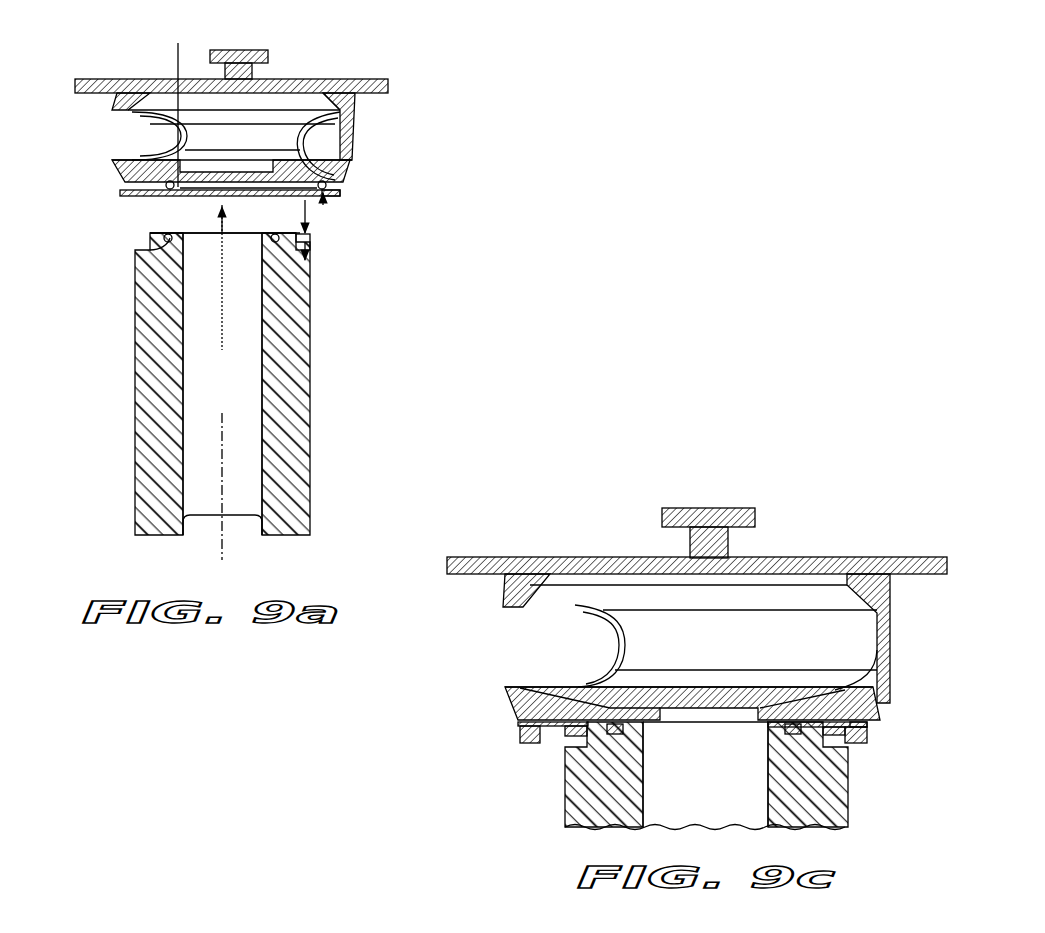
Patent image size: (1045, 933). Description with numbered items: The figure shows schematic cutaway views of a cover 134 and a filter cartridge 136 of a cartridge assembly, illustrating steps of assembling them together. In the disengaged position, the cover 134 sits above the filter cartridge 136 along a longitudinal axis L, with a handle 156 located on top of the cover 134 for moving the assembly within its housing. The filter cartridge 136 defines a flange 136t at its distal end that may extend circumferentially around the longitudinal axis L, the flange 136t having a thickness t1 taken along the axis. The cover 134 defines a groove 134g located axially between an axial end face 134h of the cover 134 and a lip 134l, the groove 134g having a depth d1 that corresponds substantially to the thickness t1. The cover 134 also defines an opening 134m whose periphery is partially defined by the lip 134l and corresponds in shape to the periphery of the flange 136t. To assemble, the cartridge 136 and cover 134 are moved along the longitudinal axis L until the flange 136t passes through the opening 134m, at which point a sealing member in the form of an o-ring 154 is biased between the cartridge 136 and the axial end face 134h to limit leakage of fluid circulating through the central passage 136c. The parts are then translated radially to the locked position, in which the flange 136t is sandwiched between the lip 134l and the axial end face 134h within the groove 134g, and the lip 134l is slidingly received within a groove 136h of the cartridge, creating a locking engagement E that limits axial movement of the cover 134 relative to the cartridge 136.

In FIG. 9A, the cover 134 is at (362, 136).
In FIG. 9C, the cover 134 is at (845, 555).
In FIG. 9A, the handle 156 is at (262, 48).
In FIG. 9A, the groove 134g is at (347, 104).
In FIG. 9C, the groove 134g is at (858, 737).
In FIG. 9A, the axial end face 134h is at (180, 104).
In FIG. 9C, the axial end face 134h is at (775, 740).
In FIG. 9A, the opening 134m is at (140, 196).
In FIG. 9C, the opening 134m is at (692, 732).
In FIG. 9A, the lip 134l is at (313, 200).
In FIG. 9C, the lip 134l is at (860, 752).
In FIG. 9A, the depth d1 is at (326, 203).
In FIG. 9A, the thickness t1 is at (312, 260).
In FIG. 9A, the filter cartridge 136 is at (346, 349).
In FIG. 9C, the filter cartridge 136 is at (540, 793).
In FIG. 9A, the flange 136t is at (162, 238).
In FIG. 9C, the flange 136t is at (775, 769).
In FIG. 9A, the o-ring 154 is at (152, 252).
In FIG. 9A, the central passage 136c is at (246, 402).
In FIG. 9A, the longitudinal axis L is at (226, 487).
In FIG. 9C, the groove 136h is at (820, 740).
In FIG. 9C, the locking engagement E is at (860, 762).